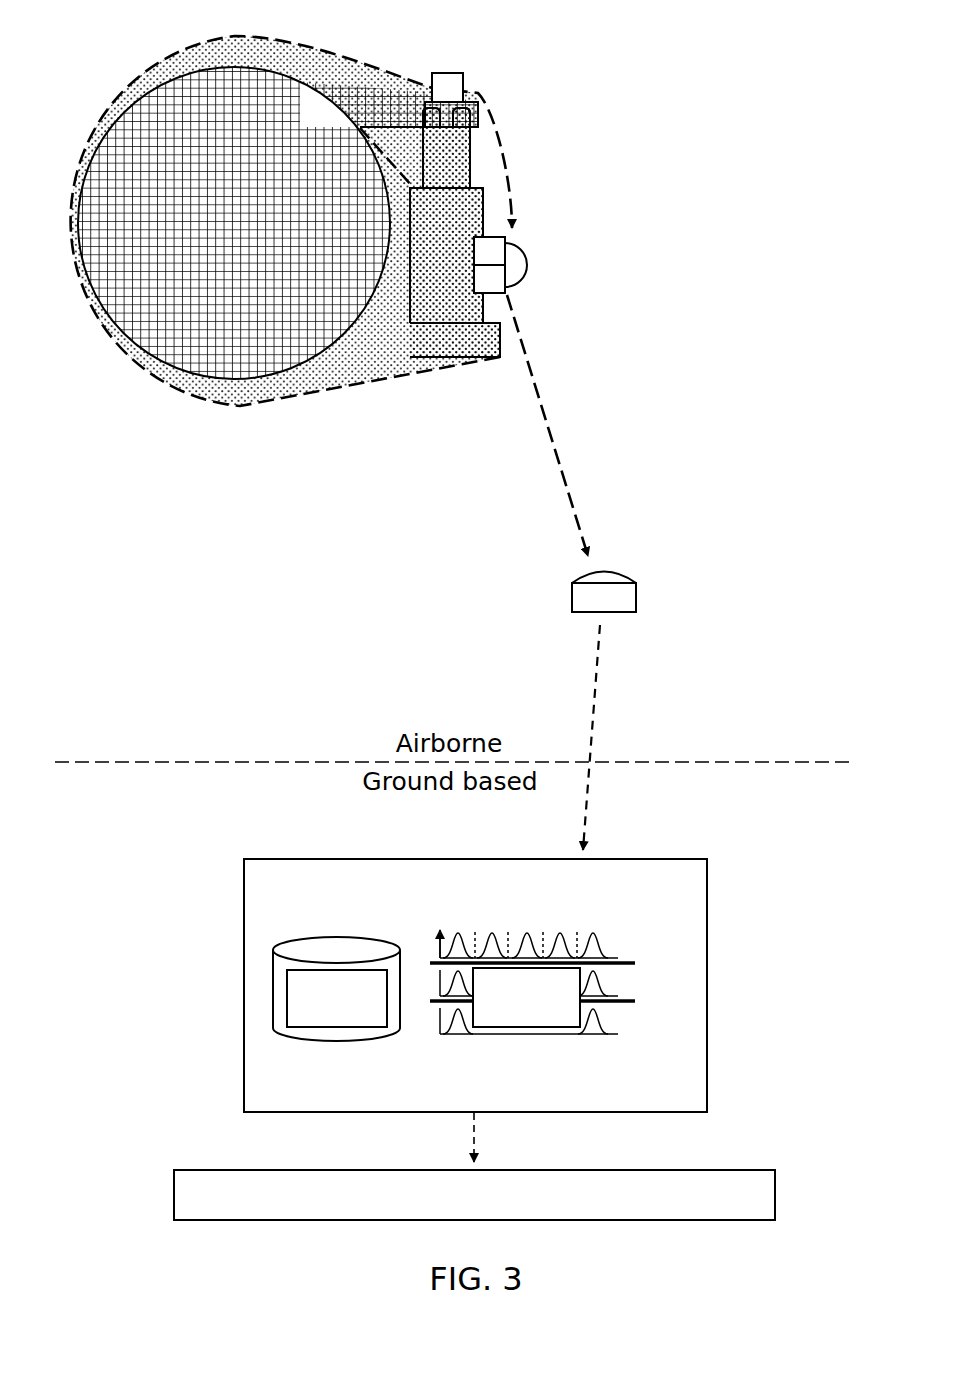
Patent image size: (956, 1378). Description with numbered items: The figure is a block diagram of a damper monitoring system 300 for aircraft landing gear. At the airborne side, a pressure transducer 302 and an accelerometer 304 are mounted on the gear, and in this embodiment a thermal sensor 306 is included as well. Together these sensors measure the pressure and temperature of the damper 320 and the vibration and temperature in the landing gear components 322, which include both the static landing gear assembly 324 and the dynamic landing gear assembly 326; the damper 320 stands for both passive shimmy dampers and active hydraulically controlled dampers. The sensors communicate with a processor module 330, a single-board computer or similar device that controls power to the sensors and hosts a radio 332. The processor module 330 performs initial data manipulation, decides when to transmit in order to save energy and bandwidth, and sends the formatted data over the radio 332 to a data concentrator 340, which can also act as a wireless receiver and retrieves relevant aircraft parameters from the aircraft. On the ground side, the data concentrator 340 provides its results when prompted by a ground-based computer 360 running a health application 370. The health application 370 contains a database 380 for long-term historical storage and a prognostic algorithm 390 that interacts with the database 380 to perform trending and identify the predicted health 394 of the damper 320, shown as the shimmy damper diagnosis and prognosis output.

The damper monitoring system 300 is at (507, 50).
The pressure transducer 302 is at (492, 248).
The accelerometer 304 is at (455, 86).
The thermal sensor 306 is at (549, 287).
The damper 320 is at (447, 297).
The landing gear components 322 is at (302, 425).
The static landing gear assembly 324 is at (193, 403).
The dynamic landing gear assembly 326 is at (130, 337).
The processor module 330 is at (518, 262).
The radio 332 is at (490, 280).
The data concentrator 340 is at (585, 598).
The ground-based computer 360 is at (708, 903).
The health application 370 is at (663, 1003).
The database 380 is at (340, 1045).
The prognostic algorithm 390 is at (525, 1035).
The predicted health 394 is at (740, 1170).